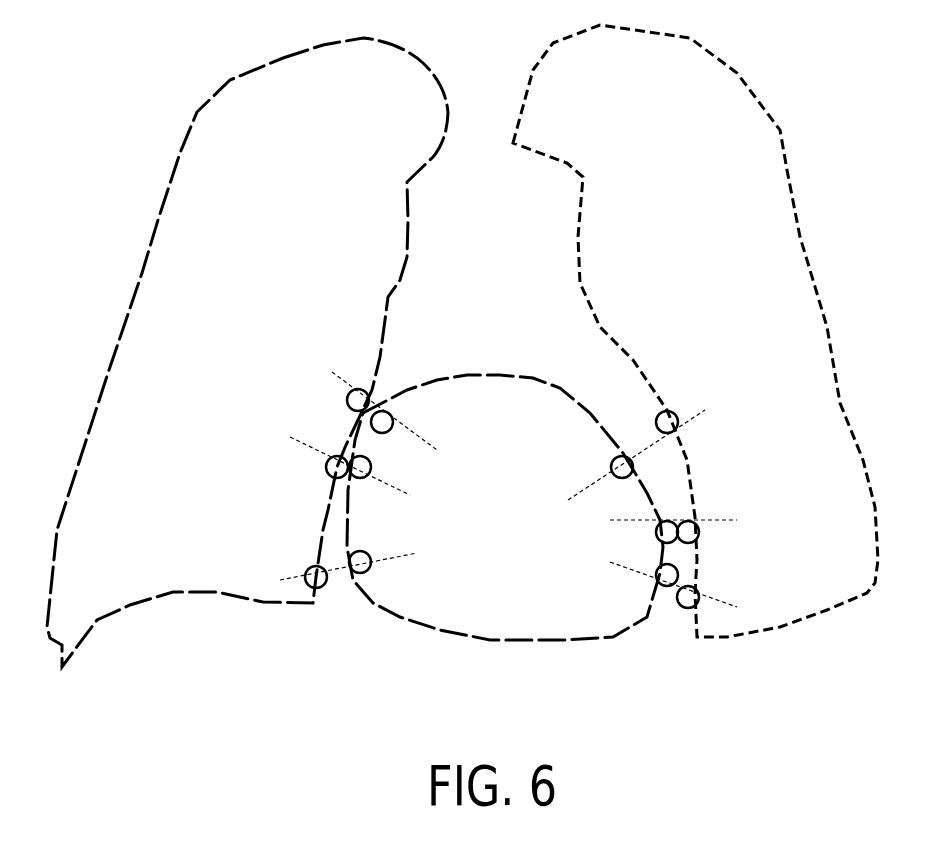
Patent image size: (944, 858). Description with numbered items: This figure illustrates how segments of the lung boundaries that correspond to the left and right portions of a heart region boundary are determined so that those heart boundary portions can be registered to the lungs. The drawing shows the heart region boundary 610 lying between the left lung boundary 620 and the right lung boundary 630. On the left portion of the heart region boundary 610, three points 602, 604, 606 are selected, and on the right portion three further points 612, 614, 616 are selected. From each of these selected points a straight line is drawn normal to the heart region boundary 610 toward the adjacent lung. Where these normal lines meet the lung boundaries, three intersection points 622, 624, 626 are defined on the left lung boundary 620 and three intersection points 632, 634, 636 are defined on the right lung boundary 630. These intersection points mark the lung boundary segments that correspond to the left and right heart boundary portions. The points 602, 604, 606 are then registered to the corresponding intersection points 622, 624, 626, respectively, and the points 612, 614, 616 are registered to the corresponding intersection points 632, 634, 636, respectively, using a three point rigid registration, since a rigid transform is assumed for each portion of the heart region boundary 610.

The heart region boundary 610 is at (516, 517).
The left lung boundary 620 is at (289, 152).
The right lung boundary 630 is at (633, 152).
The selected point 602 is at (393, 421).
The selected point 604 is at (371, 467).
The selected point 606 is at (372, 566).
The selected point 612 is at (611, 463).
The selected point 614 is at (656, 532).
The selected point 616 is at (656, 580).
The intersection point 622 is at (347, 401).
The intersection point 624 is at (326, 470).
The intersection point 626 is at (306, 570).
The intersection point 632 is at (675, 413).
The intersection point 634 is at (699, 535).
The intersection point 636 is at (699, 592).